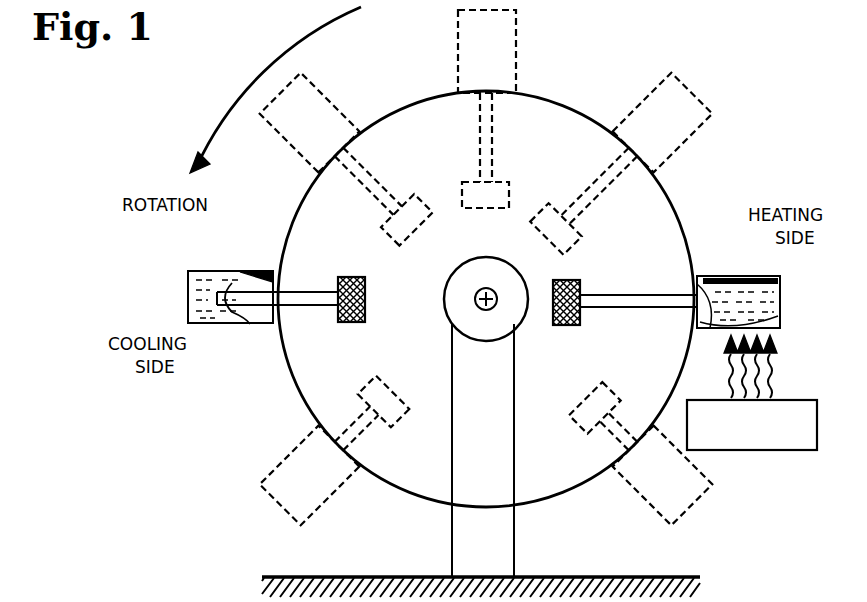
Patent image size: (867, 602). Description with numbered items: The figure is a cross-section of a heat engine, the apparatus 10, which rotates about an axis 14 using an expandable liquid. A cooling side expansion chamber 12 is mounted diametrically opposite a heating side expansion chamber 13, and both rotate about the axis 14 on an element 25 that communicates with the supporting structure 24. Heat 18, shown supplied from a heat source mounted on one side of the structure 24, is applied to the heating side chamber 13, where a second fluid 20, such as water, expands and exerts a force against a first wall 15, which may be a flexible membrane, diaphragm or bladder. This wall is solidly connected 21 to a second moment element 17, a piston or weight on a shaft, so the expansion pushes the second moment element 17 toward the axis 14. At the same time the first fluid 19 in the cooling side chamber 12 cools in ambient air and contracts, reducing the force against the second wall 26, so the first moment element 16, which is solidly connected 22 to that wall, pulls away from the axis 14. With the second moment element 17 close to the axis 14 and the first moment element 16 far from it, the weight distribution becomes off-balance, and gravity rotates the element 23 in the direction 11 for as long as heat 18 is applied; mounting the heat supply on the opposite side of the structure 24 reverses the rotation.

The apparatus 10 is at (658, 38).
The rotation direction 11 is at (228, 109).
The cooling side expansion chamber 12 is at (192, 279).
The heating side expansion chamber 13 is at (745, 277).
The axis 14 is at (479, 292).
The first wall 15 is at (780, 320).
The first moment element 16 is at (366, 287).
The second moment element 17 is at (582, 291).
The heat 18 is at (817, 432).
The first fluid 19 is at (190, 302).
The second fluid 20 is at (783, 302).
The solid connection 21 is at (695, 298).
The solid connection 22 is at (275, 292).
The rotating element 23 is at (410, 495).
The structure 24 is at (451, 552).
The axle element 25 is at (492, 289).
The second wall 26 is at (247, 316).